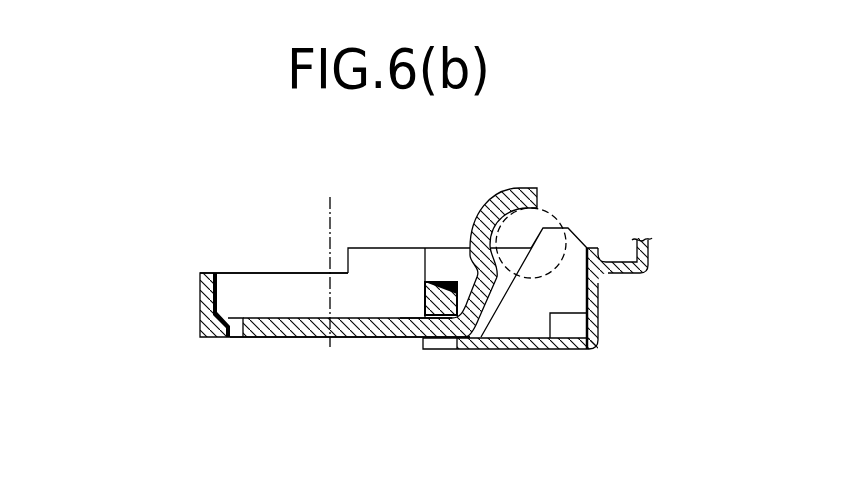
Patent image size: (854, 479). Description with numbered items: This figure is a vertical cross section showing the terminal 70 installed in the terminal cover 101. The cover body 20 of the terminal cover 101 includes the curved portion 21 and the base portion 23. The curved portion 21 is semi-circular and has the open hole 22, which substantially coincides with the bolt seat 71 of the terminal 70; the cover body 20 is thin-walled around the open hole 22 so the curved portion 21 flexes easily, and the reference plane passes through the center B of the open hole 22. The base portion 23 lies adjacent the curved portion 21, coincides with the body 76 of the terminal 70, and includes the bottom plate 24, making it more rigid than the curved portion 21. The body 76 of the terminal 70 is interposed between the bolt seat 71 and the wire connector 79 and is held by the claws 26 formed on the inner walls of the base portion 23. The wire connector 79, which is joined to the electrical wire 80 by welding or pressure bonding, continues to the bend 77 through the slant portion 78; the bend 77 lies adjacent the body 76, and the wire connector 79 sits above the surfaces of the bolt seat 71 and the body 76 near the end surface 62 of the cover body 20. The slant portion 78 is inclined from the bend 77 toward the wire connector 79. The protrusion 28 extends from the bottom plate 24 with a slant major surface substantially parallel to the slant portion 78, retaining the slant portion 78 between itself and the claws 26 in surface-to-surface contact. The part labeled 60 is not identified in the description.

The terminal cover 101 is at (230, 194).
The cover body 20 is at (200, 349).
The curved portion 21 is at (203, 294).
The open hole 22 is at (237, 318).
The end surface 62 is at (367, 247).
The claw 26 is at (430, 290).
The terminal 70 is at (350, 346).
The bolt seat 71 is at (265, 338).
The body 76 is at (413, 337).
The bend 77 is at (468, 345).
The slant portion 78 is at (473, 303).
The wire connector 79 is at (490, 208).
The electrical wire 80 is at (535, 230).
The base portion 23 is at (577, 357).
The bottom plate 24 is at (533, 350).
The protrusion 28 is at (562, 293).
The mating terminal 60 is at (652, 250).
The center of the open hole B is at (330, 208).